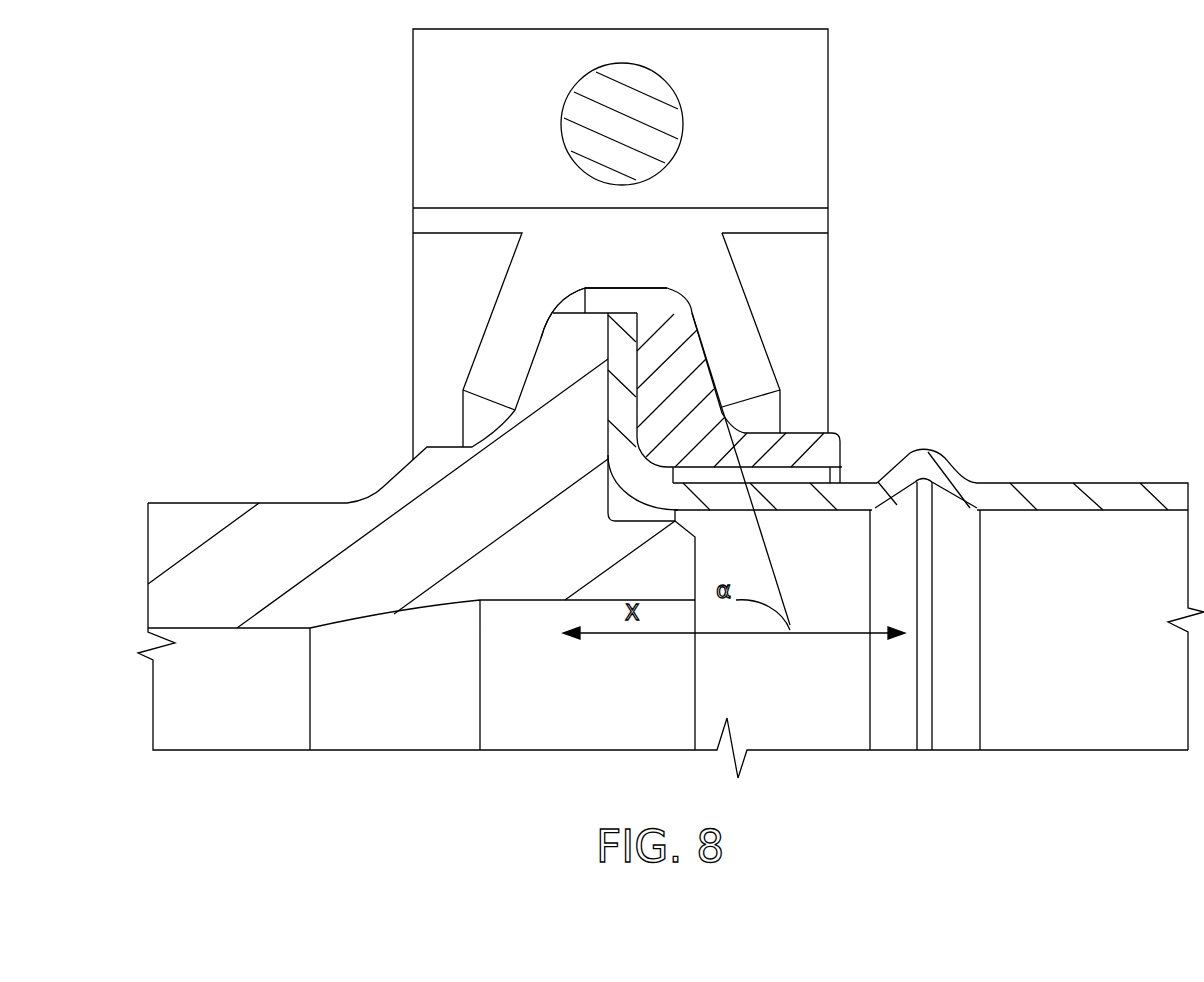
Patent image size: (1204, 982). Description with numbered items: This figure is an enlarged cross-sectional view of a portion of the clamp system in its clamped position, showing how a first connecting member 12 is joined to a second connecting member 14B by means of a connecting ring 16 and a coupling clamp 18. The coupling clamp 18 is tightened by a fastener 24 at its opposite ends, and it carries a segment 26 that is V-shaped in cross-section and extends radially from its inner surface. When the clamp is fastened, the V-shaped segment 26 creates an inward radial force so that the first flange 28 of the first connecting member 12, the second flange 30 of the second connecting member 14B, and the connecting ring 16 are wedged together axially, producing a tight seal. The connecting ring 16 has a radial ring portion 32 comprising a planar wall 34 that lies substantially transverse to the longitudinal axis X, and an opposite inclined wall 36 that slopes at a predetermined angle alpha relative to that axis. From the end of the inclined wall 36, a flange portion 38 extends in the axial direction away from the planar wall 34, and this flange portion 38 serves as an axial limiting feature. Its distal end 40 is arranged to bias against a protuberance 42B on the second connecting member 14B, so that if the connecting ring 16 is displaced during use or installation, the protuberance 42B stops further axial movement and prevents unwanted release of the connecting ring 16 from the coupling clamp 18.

The first connecting member 12 is at (303, 502).
The second connecting member 14B is at (1007, 483).
The connecting ring 16 is at (792, 432).
The coupling clamp 18 is at (413, 127).
The fastener 24 is at (620, 62).
The V-shaped segment 26 is at (708, 282).
The first flange 28 is at (562, 333).
The second flange 30 is at (625, 313).
The radial ring portion 32 is at (658, 313).
The planar wall 34 is at (637, 405).
The inclined wall 36 is at (690, 378).
The flange portion 38 is at (793, 463).
The distal end 40 is at (828, 453).
The protuberance 42B is at (925, 453).